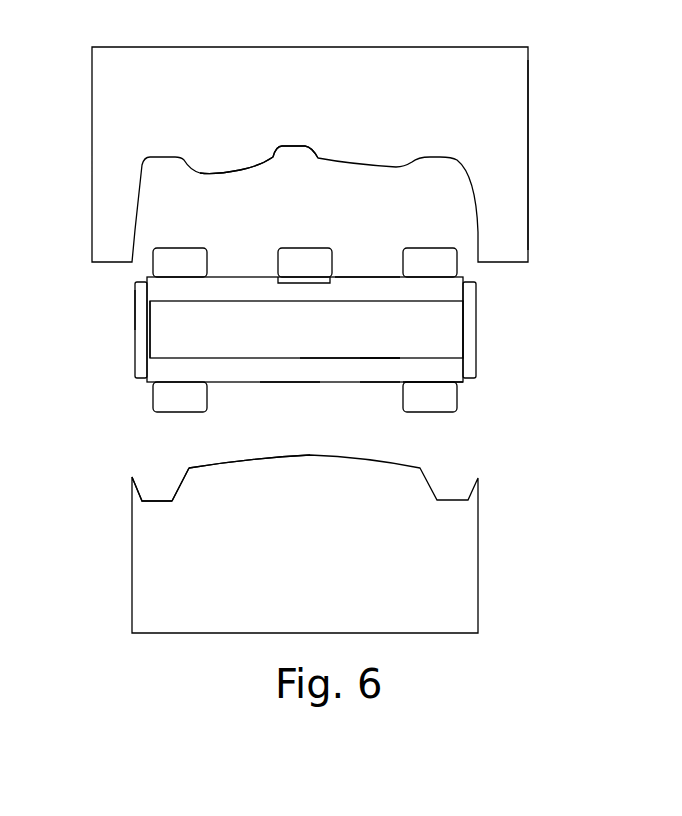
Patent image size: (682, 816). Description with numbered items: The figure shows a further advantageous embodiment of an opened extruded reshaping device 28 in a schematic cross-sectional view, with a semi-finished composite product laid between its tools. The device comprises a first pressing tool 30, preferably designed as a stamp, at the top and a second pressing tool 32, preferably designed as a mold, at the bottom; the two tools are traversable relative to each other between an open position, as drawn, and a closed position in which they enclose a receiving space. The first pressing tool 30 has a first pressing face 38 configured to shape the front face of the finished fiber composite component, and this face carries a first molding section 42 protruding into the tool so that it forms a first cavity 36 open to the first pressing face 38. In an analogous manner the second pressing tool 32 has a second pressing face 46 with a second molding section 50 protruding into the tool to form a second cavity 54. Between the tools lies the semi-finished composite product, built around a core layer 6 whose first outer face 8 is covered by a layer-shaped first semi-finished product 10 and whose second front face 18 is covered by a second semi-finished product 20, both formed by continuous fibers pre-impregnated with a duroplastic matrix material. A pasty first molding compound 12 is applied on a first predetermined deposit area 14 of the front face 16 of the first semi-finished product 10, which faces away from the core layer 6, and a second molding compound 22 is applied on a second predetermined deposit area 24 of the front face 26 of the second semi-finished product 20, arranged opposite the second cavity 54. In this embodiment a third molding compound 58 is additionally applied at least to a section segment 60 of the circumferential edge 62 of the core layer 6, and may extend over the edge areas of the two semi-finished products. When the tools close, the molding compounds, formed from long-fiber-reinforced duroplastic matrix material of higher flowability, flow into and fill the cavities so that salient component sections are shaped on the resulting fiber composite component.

The core layer 6 is at (378, 352).
The outer face of the core layer 8 is at (218, 305).
The first semi-finished product 10 is at (375, 277).
The first molding compound 12 is at (308, 247).
The first predetermined deposit area 14 is at (303, 284).
The front face of the first semi-finished product 16 is at (345, 276).
The second front face of the core layer 18 is at (340, 357).
The second semi-finished product 20 is at (385, 380).
The second molding compound 22 is at (157, 414).
The second predetermined deposit area 24 is at (430, 378).
The front face of the second semi-finished product 26 is at (288, 381).
The extruded reshaping device 28 is at (560, 88).
The first pressing tool 30 is at (538, 155).
The second pressing tool 32 is at (483, 537).
The first cavity 36 is at (293, 157).
The first pressing face 38 is at (242, 173).
The first molding section 42 is at (318, 150).
The second pressing face 46 is at (235, 461).
The second molding section 50 is at (186, 486).
The second cavity 54 is at (175, 468).
The third molding compound 58 is at (133, 333).
The section segment 60 is at (154, 330).
The circumferential edge 62 is at (134, 311).